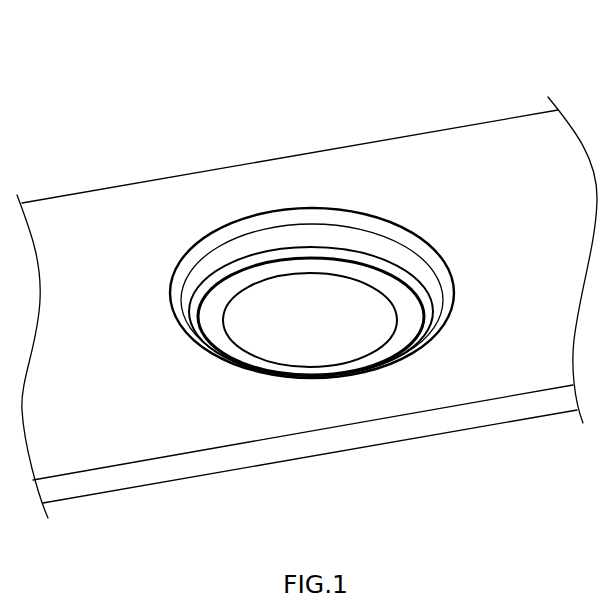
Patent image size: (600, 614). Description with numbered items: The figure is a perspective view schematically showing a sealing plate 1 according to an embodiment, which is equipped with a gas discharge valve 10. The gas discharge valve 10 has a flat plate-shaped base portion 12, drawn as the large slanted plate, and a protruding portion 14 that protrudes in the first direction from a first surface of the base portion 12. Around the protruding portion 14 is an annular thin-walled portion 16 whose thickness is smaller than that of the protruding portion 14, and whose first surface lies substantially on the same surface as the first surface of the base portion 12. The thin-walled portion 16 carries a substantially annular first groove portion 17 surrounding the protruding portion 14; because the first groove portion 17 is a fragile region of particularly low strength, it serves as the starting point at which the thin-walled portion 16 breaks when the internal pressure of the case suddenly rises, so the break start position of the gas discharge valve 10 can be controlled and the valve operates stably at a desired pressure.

The sealing plate 1 is at (45, 46).
The gas discharge valve 10 is at (247, 188).
The base portion 12 is at (442, 150).
The protruding portion 14 is at (293, 303).
The thin-walled portion 16 is at (238, 267).
The first groove portion 17 is at (372, 267).